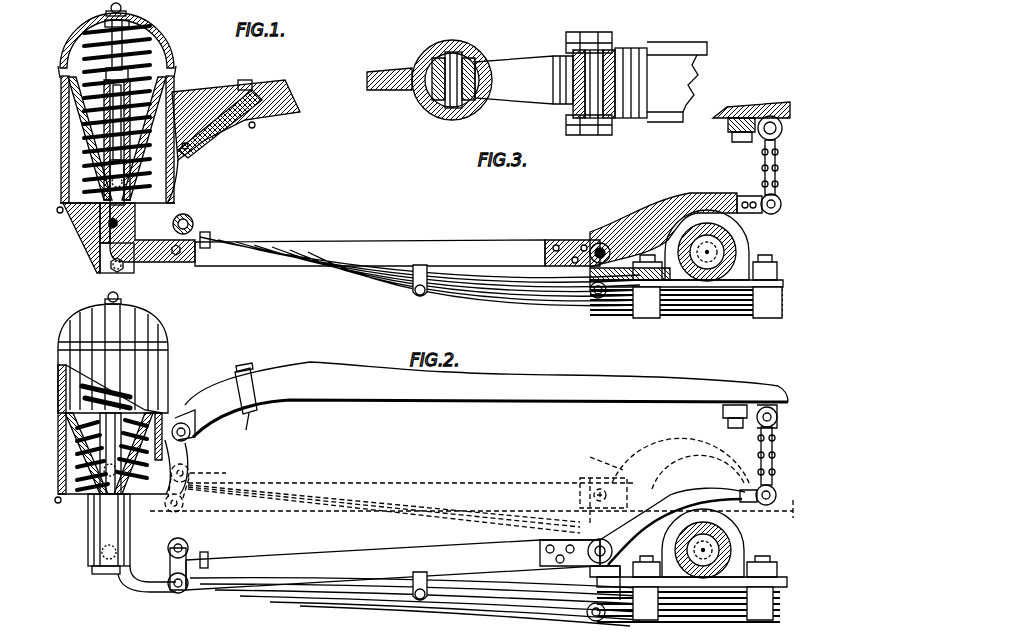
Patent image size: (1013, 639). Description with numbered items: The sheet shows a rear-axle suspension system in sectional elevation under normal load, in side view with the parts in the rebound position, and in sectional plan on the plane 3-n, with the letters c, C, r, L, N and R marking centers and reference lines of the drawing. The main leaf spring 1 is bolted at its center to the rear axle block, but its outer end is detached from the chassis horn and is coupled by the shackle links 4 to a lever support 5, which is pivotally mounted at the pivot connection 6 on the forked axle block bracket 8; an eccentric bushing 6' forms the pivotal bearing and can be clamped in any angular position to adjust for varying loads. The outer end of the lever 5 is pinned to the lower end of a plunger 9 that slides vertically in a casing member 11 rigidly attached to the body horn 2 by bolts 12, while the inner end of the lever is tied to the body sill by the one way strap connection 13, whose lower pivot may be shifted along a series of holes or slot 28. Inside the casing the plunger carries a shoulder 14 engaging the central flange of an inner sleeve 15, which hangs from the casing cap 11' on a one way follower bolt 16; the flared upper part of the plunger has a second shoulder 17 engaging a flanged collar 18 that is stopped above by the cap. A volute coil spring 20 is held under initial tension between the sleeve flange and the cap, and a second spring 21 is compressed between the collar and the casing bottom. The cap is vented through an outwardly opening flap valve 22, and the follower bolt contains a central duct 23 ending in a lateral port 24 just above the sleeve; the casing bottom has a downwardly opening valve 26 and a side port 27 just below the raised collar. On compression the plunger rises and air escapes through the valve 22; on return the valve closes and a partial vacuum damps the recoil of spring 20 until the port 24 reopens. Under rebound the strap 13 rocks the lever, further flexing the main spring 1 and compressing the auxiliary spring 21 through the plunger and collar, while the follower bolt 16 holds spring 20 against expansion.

In FIG. 1, the main leaf spring 1 is at (528, 300).
In FIG. 3, the main leaf spring 1 is at (572, 82).
In FIG. 2, the main leaf spring 1 is at (382, 584).
In FIG. 1, the body horn 2 is at (286, 110).
In FIG. 2, the body horn 2 is at (270, 372).
In FIG. 1, the sectional plane 3-n 3 is at (240, 223).
In FIG. 1, the shackle links 4 is at (194, 222).
In FIG. 3, the shackle links 4 is at (566, 44).
In FIG. 2, the shackle links 4 is at (184, 592).
In FIG. 1, the lever support 5 is at (152, 262).
In FIG. 3, the lever support 5 is at (509, 64).
In FIG. 2, the lever support 5 is at (490, 562).
In FIG. 1, the pivot connection 6 is at (572, 239).
In FIG. 2, the pivot connection 6 is at (557, 517).
In FIG. 1, the eccentric bushing 6' is at (601, 234).
In FIG. 1, the axle block bracket 8 is at (600, 282).
In FIG. 2, the axle block bracket 8 is at (592, 578).
In FIG. 1, the plunger 9 is at (180, 162).
In FIG. 3, the plunger 9 is at (440, 114).
In FIG. 2, the plunger 9 is at (94, 572).
In FIG. 1, the casing member 11 is at (102, 143).
In FIG. 3, the casing member 11 is at (429, 79).
In FIG. 2, the casing member 11 is at (128, 420).
In FIG. 1, the casing cap 11' is at (187, 44).
In FIG. 2, the casing cap 11' is at (97, 358).
In FIG. 1, the bolts 12 is at (208, 143).
In FIG. 2, the bolts 12 is at (194, 436).
In FIG. 1, the one way strap connection 13 is at (765, 160).
In FIG. 2, the one way strap connection 13 is at (757, 457).
In FIG. 1, the shoulder 14 is at (108, 142).
In FIG. 2, the shoulder 14 is at (96, 456).
In FIG. 1, the inner sleeve 15 is at (78, 112).
In FIG. 2, the inner sleeve 15 is at (110, 440).
In FIG. 1, the follower bolt 16 is at (118, 52).
In FIG. 1, the second shoulder 17 is at (166, 76).
In FIG. 2, the second shoulder 17 is at (86, 408).
In FIG. 1, the flanged collar 18 is at (76, 97).
In FIG. 2, the flanged collar 18 is at (74, 430).
In FIG. 1, the volute coil spring 20 is at (78, 40).
In FIG. 2, the volute coil spring 20 is at (84, 390).
In FIG. 1, the second spring 21 is at (92, 182).
In FIG. 2, the second spring 21 is at (76, 482).
In FIG. 1, the flap valve 22 is at (95, 17).
In FIG. 2, the flap valve 22 is at (100, 300).
In FIG. 1, the central duct 23 is at (112, 152).
In FIG. 1, the lateral port 24 is at (68, 60).
In FIG. 1, the downwardly opening valve 26 is at (58, 209).
In FIG. 2, the downwardly opening valve 26 is at (56, 502).
In FIG. 1, the port 27 is at (62, 137).
In FIG. 2, the port 27 is at (66, 424).
In FIG. 1, the holes or slot 28 is at (757, 196).
In FIG. 2, the holes or slot 28 is at (747, 489).
In FIG. 1, the pivot center c is at (130, 183).
In FIG. 2, the pivot center c is at (471, 495).
In FIG. 2, the arc of movement C is at (660, 463).
In FIG. 1, the pivot center r is at (97, 264).
In FIG. 2, the pivot center r is at (100, 547).
In FIG. 1, the sectional plane 3- n is at (145, 145).
In FIG. 1, the axis line L is at (60, 78).
In FIG. 1, the axle center N is at (708, 251).
In FIG. 2, the axle center R is at (706, 552).